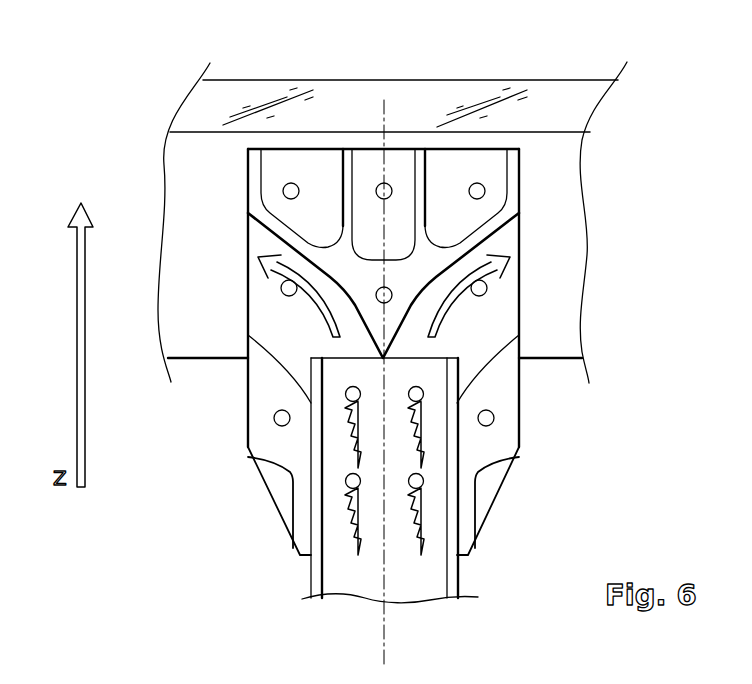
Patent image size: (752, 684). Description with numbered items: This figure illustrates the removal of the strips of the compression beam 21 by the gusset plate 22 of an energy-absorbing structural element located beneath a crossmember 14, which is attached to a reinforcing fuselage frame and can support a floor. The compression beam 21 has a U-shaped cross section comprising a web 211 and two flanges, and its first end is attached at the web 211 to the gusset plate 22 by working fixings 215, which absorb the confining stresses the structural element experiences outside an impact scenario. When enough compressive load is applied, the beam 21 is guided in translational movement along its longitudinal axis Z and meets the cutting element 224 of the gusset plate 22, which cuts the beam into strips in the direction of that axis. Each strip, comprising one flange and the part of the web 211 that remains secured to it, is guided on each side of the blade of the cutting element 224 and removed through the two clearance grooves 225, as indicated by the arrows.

The crossmember 14 is at (552, 105).
The gusset plate 22 is at (244, 199).
The clearance groove 225 is at (508, 296).
The cutting element 224 is at (392, 318).
The working fixings 215 is at (416, 394).
The compression beam 21 is at (308, 570).
The web 211 is at (425, 568).